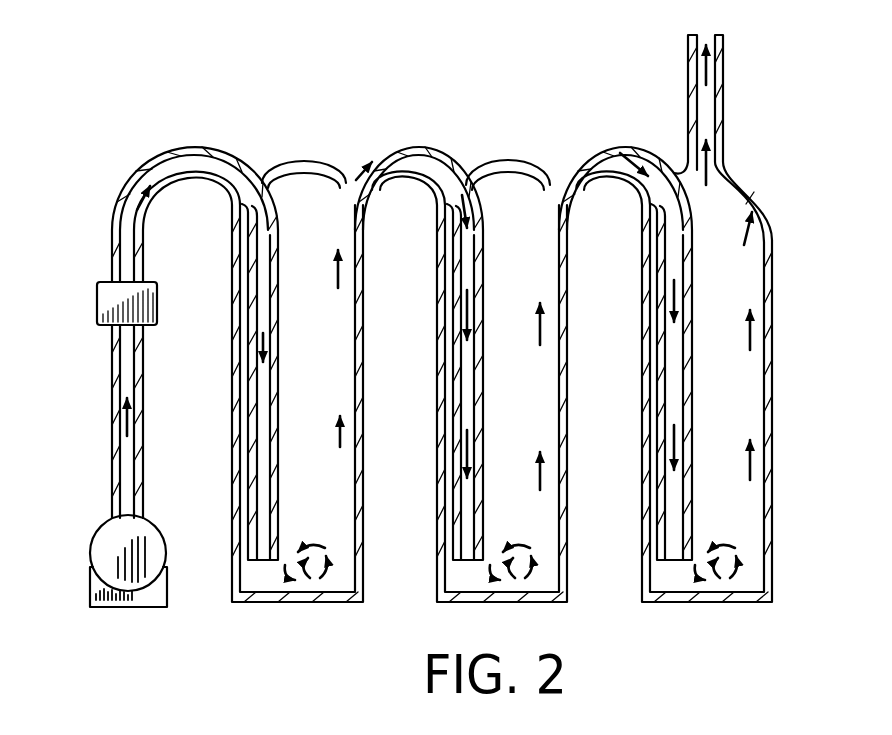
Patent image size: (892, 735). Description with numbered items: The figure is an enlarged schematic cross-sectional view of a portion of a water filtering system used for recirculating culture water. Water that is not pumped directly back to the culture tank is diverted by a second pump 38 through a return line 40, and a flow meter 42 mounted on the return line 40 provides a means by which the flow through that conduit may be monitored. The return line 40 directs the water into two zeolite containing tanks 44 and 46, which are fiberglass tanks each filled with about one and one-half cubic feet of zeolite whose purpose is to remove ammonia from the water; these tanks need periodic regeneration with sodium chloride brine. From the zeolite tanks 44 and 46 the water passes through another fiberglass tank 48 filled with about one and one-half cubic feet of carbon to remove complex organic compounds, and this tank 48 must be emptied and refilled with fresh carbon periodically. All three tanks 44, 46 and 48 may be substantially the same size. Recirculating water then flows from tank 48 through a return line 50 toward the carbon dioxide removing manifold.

The second pump 38 is at (108, 540).
The return line 40 is at (112, 398).
The flow meter 42 is at (97, 302).
The zeolite containing tank 44 is at (305, 162).
The zeolite containing tank 46 is at (508, 160).
The carbon tank 48 is at (753, 175).
The return line 50 is at (725, 98).